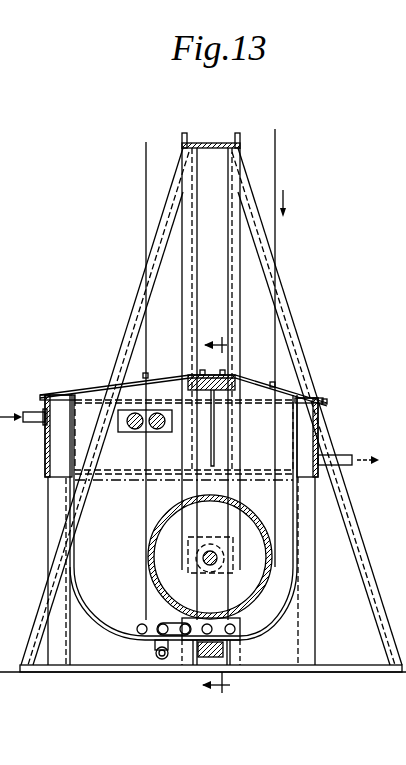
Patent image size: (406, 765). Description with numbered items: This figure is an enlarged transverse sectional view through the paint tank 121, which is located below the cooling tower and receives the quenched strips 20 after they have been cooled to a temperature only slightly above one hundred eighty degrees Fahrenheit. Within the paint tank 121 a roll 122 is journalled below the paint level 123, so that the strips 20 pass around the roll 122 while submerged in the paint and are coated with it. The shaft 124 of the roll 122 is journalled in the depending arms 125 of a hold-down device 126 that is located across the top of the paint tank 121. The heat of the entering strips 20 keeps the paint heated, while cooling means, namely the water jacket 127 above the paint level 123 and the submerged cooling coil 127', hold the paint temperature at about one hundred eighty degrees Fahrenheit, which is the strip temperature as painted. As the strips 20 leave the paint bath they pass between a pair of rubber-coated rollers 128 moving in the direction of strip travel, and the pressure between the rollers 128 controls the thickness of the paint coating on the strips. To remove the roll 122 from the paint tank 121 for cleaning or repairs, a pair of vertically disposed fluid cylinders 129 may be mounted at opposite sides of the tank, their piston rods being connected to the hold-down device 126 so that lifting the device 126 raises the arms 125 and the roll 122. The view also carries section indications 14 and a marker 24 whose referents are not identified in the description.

The section line 14 is at (222, 513).
The quenched strips 20 is at (282, 165).
The support post 24 is at (73, 381).
The paint tank 121 is at (64, 499).
The roll 122 is at (148, 553).
The paint level 123 is at (107, 482).
The shaft 124 is at (210, 567).
The depending arms 125 is at (222, 436).
The hold-down device 126 is at (231, 375).
The water jacket 127 is at (37, 440).
The submerged cooling coil 127' is at (214, 639).
The rubber-coated rollers 128 is at (156, 431).
The fluid cylinders 129 is at (196, 652).